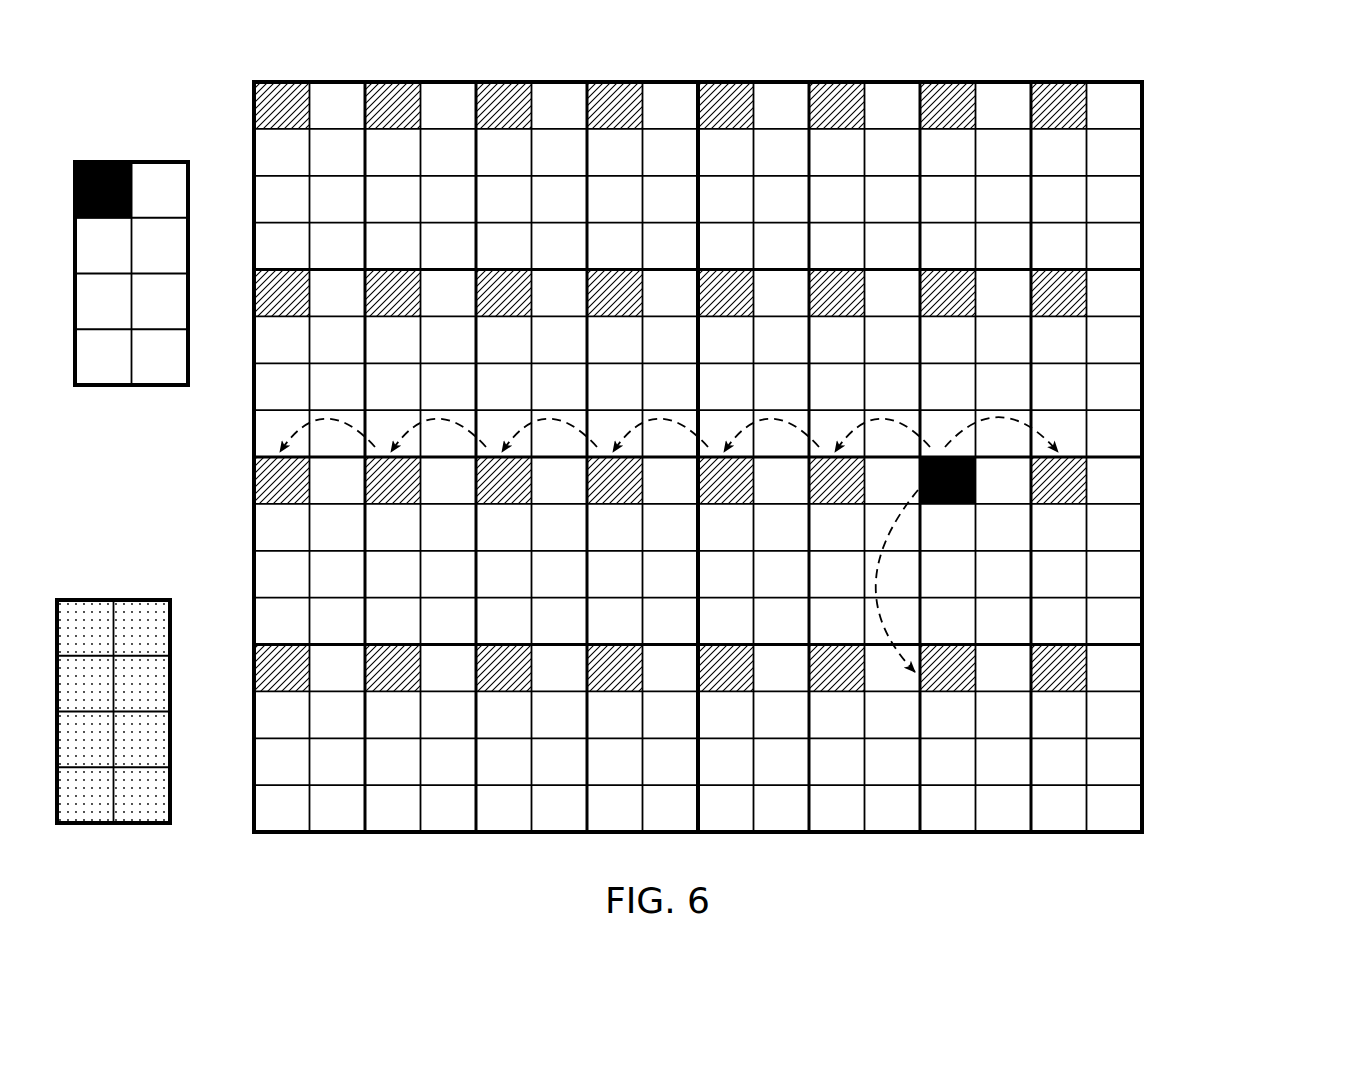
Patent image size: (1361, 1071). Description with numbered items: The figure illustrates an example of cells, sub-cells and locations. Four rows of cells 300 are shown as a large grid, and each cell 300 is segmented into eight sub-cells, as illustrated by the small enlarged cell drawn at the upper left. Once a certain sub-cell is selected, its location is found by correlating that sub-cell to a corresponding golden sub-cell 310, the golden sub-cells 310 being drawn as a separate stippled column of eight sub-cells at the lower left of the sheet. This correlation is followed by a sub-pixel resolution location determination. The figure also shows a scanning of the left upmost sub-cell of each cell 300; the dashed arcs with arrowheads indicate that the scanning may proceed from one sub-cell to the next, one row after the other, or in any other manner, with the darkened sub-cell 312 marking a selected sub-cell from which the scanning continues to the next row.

The cell 300 is at (157, 150).
The golden sub-cell 310 is at (138, 590).
The selected data block 312 is at (669, 544).